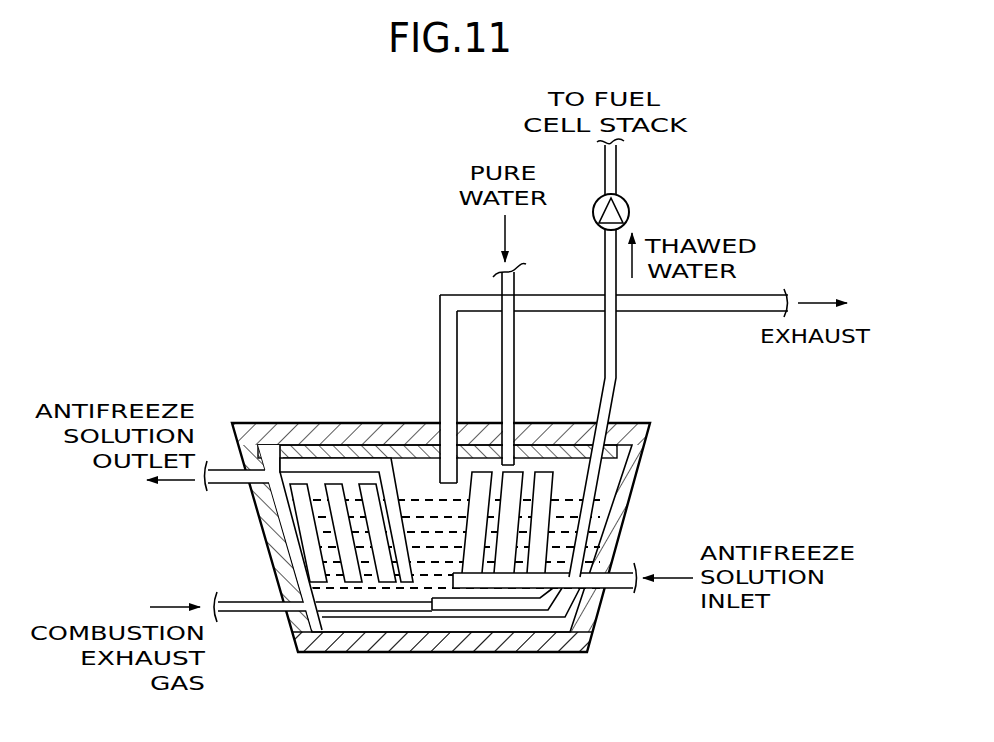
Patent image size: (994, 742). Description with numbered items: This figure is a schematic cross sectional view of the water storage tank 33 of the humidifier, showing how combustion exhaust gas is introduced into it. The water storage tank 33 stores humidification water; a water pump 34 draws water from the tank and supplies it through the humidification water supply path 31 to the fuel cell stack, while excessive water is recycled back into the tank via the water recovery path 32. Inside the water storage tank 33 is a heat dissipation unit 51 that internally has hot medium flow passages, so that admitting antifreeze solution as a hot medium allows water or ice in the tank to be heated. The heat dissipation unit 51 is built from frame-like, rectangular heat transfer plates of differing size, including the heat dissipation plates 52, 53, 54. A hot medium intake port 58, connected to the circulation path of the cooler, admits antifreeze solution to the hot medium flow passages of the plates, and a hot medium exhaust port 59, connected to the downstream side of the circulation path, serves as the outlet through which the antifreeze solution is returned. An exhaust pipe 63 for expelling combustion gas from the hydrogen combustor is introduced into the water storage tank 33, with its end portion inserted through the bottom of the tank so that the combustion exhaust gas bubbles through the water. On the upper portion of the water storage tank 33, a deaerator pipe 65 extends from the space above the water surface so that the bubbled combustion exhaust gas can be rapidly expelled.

The humidification water supply path 31 is at (619, 162).
The water recovery path 32 is at (500, 282).
The water storage tank 33 is at (660, 440).
The water pump 34 is at (630, 212).
The heat dissipation unit 51 is at (548, 641).
The heat dissipation plate 52 is at (393, 562).
The heat dissipation plate 53 is at (360, 562).
The heat dissipation plate 54 is at (333, 565).
The hot medium intake port 58 is at (616, 590).
The hot medium exhaust port 59 is at (237, 490).
The exhaust pipe 63 is at (248, 615).
The deaerator pipe 65 is at (758, 294).